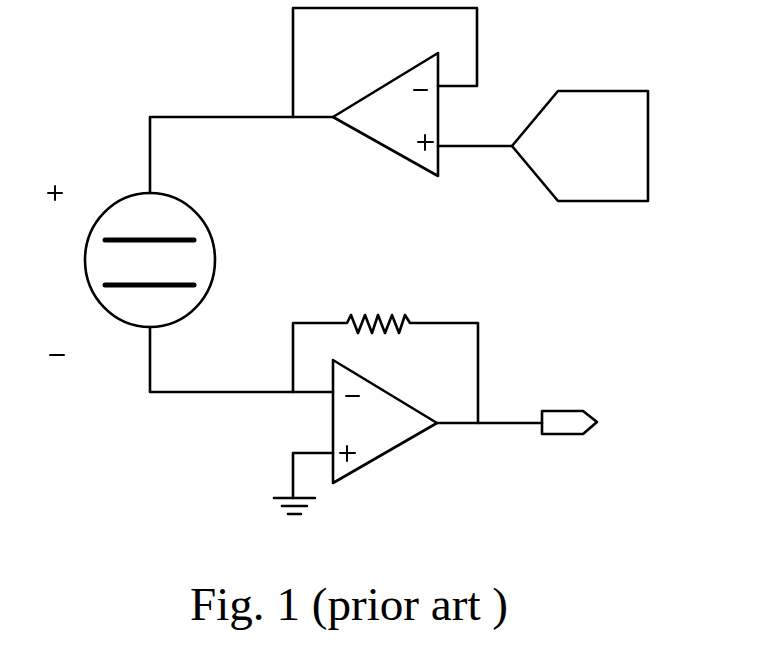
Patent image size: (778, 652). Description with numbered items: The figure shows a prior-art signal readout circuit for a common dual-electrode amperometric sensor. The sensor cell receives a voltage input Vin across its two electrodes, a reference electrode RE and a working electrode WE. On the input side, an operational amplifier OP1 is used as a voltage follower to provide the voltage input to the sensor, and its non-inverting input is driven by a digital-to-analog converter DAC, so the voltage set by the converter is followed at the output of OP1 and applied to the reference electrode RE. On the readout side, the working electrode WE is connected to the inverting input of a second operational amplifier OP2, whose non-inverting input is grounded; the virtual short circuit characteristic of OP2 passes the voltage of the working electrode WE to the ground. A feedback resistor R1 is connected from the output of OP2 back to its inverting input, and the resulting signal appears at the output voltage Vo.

The voltage input Vin is at (125, 270).
The reference electrode RE is at (149, 225).
The working electrode WE is at (149, 304).
The voltage follower OP1 is at (385, 92).
The operational amplifier OP2 is at (385, 421).
The digital-to-analog converter DAC is at (580, 146).
The feedback resistor R1 is at (385, 351).
The output voltage Vo is at (534, 423).